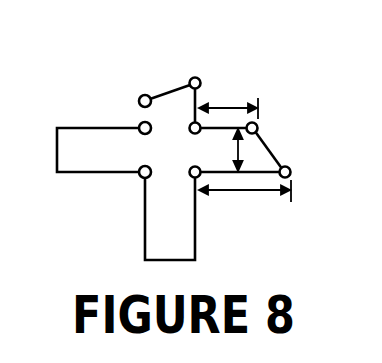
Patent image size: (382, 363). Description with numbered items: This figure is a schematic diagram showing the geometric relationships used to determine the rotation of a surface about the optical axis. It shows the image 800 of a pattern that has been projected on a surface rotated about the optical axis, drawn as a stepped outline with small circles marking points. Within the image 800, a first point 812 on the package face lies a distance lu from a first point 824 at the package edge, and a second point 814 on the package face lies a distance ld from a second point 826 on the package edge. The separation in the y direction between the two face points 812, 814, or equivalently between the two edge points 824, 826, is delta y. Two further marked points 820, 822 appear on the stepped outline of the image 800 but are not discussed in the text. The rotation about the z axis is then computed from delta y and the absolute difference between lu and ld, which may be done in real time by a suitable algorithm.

The image 800 is at (62, 35).
The first via/terminal 820 is at (140, 98).
The second via/terminal 822 is at (192, 79).
The first point on the package face 812 is at (191, 123).
The first point at the package edge 824 is at (257, 125).
The second point on the package edge 826 is at (290, 168).
The second point on the package face 814 is at (192, 178).